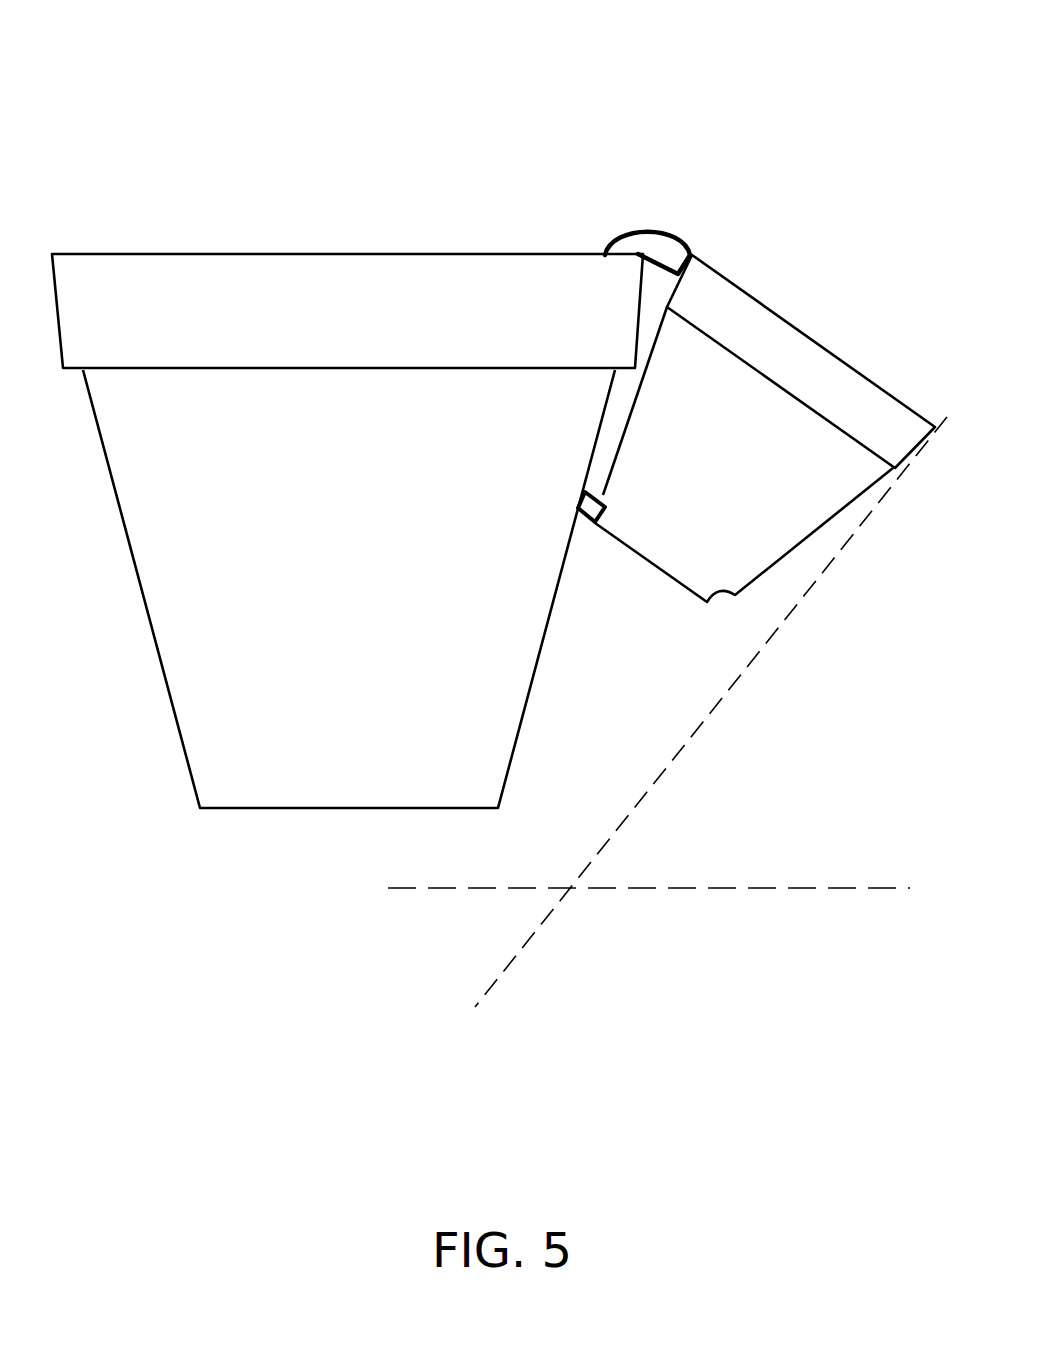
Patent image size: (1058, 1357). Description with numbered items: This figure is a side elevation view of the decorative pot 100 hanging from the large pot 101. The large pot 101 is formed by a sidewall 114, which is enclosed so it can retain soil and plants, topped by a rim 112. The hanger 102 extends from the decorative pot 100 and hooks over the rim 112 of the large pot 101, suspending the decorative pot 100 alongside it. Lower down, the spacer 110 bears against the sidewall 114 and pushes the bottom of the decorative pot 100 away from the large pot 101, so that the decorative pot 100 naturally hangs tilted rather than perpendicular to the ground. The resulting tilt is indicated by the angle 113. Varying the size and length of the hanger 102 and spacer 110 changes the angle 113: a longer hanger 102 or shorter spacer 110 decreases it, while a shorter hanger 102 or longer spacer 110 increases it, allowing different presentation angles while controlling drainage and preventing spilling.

The decorative pot 100 is at (753, 380).
The large pot 101 is at (347, 414).
The hanger 102 is at (643, 228).
The spacer 110 is at (590, 522).
The rim 112 is at (383, 303).
The angle 113 is at (598, 872).
The sidewall 114 is at (237, 605).